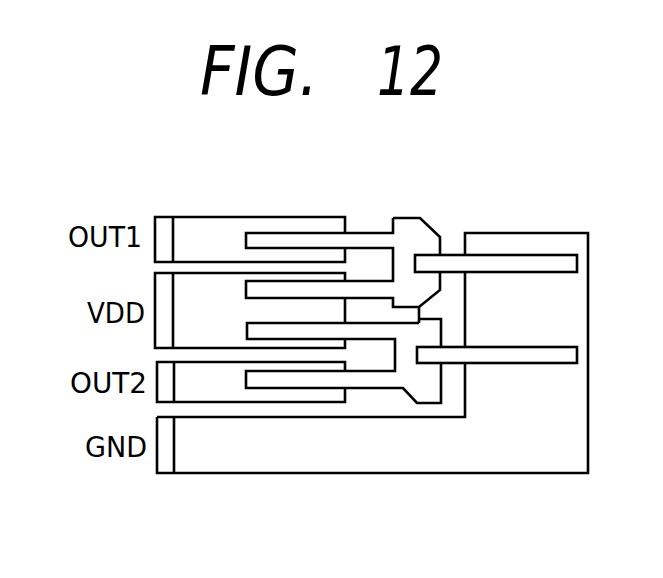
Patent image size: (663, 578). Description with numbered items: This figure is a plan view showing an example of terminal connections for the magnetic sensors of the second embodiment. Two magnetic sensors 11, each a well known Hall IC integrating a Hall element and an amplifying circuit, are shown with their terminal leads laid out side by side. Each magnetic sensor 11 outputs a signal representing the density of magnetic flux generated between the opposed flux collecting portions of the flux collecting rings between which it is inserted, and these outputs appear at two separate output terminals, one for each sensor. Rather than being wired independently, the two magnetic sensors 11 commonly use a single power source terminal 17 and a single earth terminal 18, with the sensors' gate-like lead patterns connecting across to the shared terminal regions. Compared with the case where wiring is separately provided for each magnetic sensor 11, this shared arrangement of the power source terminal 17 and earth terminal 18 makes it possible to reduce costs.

The magnetic sensor 11 is at (432, 237).
The power source terminal 17 is at (181, 291).
The earth terminal 18 is at (223, 455).